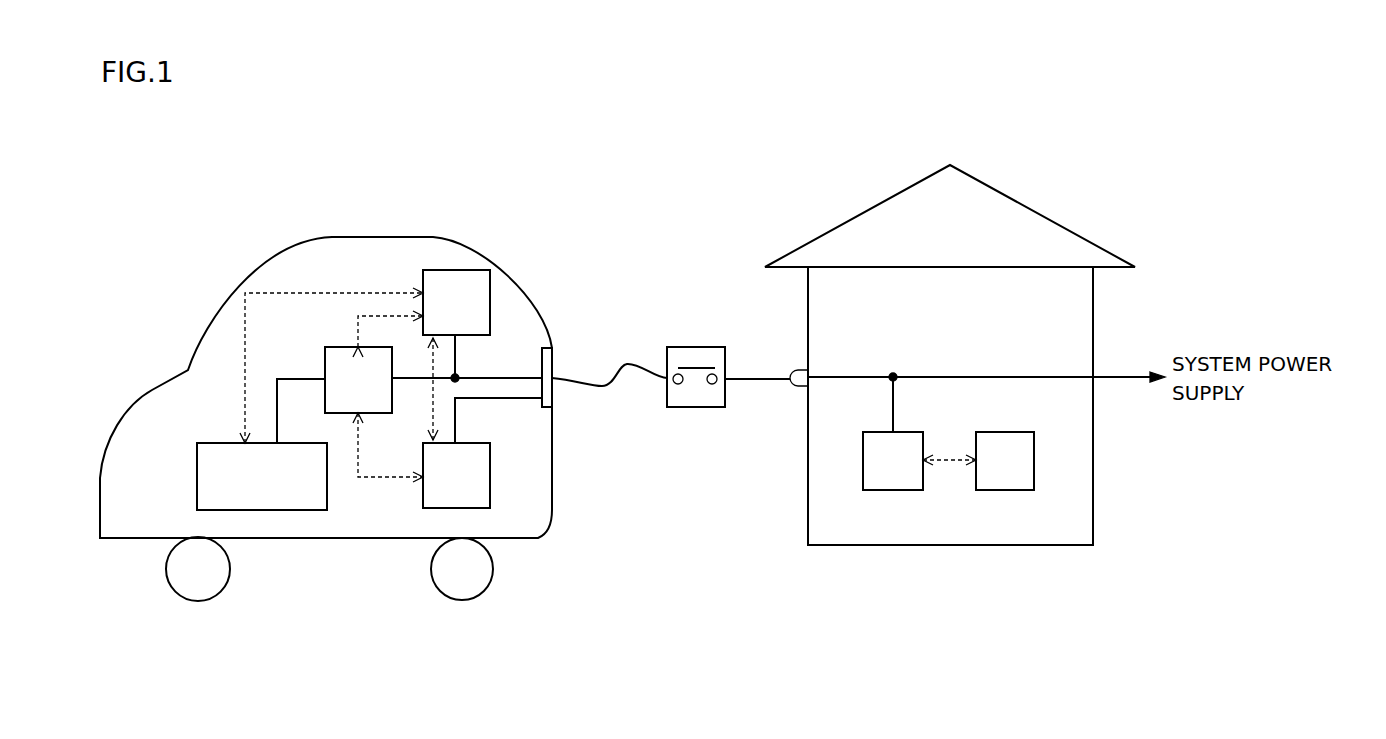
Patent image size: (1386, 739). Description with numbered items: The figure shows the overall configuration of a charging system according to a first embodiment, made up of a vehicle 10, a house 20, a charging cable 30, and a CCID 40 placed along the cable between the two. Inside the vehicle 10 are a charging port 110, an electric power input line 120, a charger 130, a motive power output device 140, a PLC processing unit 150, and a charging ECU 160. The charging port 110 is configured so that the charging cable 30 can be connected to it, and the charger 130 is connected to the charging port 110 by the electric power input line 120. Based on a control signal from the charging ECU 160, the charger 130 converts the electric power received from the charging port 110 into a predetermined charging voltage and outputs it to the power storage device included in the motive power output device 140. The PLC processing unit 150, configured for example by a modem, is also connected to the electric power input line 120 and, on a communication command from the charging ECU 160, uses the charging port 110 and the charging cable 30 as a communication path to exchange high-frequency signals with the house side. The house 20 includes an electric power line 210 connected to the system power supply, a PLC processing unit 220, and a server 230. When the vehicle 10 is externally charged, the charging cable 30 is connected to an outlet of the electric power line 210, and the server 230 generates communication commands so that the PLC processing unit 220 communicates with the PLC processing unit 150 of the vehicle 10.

The vehicle 10 is at (338, 237).
The house 20 is at (868, 210).
The charging cable 30 is at (627, 362).
The CCID (Charging Circuit Interrupt Device) 40 is at (695, 347).
The charging port 110 is at (550, 330).
The electric power input line 120 is at (510, 378).
The charger 130 is at (325, 357).
The motive power output device 140 is at (197, 478).
The PLC processing unit 150 is at (455, 270).
The charging ECU (Electronic Control Unit) 160 is at (473, 442).
The electric power line 210 is at (965, 375).
The PLC processing unit 220 is at (893, 490).
The server 230 is at (1003, 490).